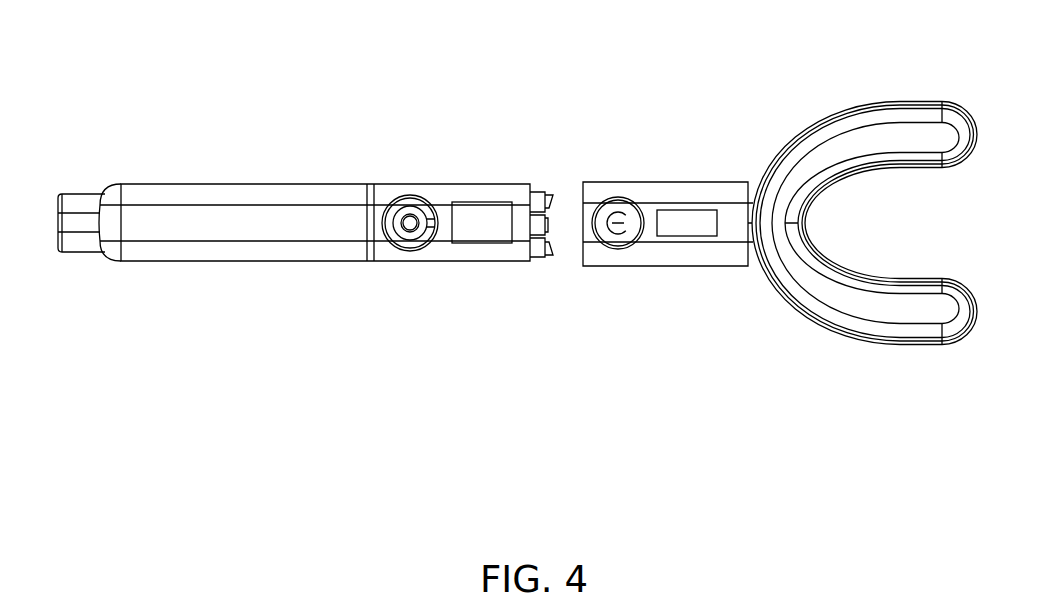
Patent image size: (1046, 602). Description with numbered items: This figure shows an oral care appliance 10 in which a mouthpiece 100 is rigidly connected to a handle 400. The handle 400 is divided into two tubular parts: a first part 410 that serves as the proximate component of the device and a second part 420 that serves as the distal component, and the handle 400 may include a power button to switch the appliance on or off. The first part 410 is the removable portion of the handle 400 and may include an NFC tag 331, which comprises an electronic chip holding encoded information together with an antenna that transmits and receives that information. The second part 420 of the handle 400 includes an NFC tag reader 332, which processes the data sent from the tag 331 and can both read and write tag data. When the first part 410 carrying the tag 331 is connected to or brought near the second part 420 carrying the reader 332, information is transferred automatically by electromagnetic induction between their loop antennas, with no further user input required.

The oral care system 10 is at (558, 84).
The mouthpiece 100 is at (884, 118).
The NFC tag 331 is at (672, 223).
The NFC reader 332 is at (466, 212).
The handle 400 is at (57, 337).
The first part 410 is at (583, 283).
The second part 420 is at (553, 283).